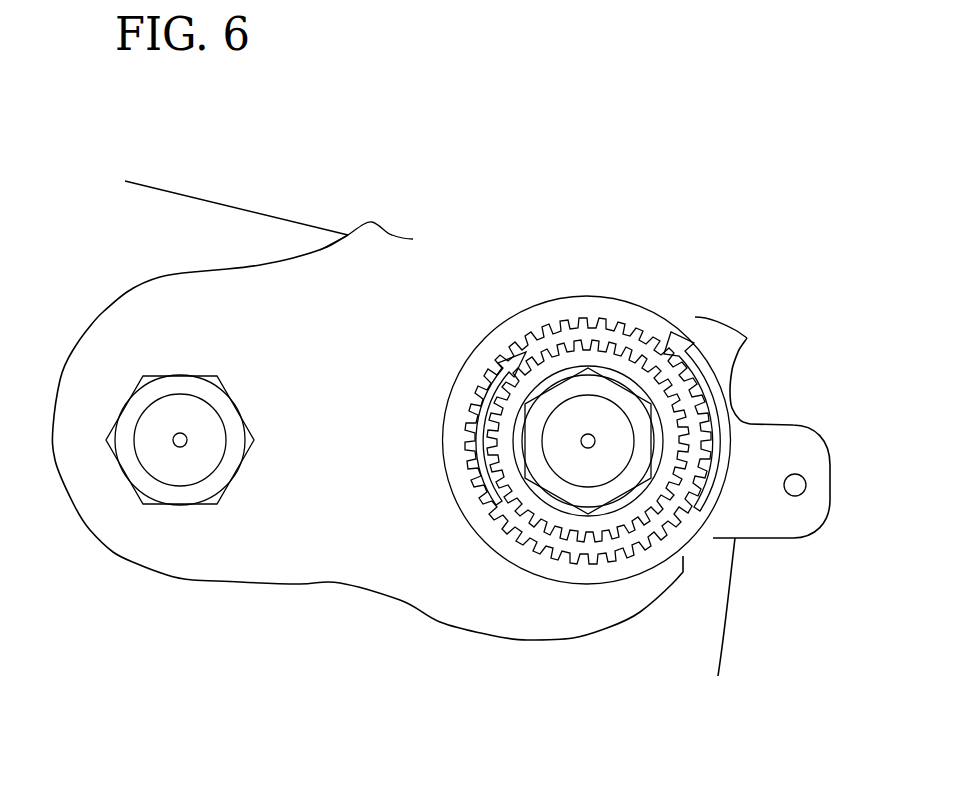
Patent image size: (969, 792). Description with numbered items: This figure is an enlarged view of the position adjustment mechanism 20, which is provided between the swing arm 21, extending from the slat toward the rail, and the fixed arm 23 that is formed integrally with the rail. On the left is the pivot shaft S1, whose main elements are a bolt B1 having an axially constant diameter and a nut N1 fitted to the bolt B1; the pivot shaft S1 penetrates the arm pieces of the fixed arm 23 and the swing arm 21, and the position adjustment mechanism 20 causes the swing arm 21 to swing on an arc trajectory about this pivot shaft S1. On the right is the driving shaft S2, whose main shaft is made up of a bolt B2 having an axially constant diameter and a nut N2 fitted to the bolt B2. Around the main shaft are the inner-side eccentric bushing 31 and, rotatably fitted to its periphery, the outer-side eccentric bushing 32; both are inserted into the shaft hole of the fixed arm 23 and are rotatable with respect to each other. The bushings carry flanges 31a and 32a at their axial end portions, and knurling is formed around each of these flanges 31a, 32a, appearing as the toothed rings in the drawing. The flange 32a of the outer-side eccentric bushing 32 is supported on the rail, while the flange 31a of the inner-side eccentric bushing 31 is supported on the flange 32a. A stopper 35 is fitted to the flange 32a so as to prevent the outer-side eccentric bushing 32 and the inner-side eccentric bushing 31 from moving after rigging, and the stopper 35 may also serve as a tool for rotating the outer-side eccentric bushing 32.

The position adjustment mechanism 20 is at (458, 215).
The swing arm 21 is at (240, 207).
The fixed arm 23 is at (332, 584).
The inner-side eccentric bushing 31 is at (572, 350).
The flange 31a is at (545, 346).
The outer-side eccentric bushing 32 is at (652, 311).
The flange 32a is at (640, 334).
The stopper 35 is at (770, 425).
The nut N1 is at (107, 442).
The bolt B1 is at (140, 462).
The pivot shaft S1 is at (187, 468).
The nut N2 is at (525, 480).
The bolt B2 is at (556, 478).
The driving shaft S2 is at (594, 458).